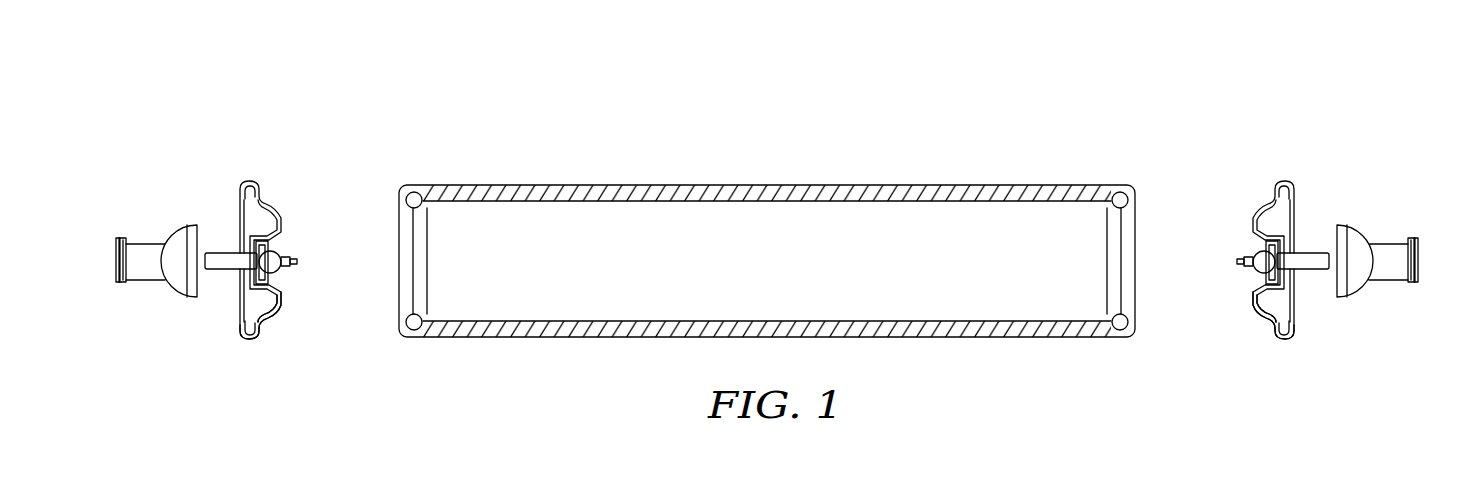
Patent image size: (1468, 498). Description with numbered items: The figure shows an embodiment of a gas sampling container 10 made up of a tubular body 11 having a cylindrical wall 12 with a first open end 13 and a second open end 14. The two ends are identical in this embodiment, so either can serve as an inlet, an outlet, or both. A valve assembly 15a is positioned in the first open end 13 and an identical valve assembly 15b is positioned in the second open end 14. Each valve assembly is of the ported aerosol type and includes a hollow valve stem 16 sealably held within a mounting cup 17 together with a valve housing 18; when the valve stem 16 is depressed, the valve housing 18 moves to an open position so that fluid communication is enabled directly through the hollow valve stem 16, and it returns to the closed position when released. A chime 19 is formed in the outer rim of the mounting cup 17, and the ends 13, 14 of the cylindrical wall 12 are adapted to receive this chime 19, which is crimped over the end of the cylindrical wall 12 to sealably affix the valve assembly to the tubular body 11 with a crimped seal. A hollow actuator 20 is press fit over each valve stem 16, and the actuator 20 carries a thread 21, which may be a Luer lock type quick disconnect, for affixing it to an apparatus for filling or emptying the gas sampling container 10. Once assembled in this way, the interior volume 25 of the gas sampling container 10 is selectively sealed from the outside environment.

The gas sampling container 10 is at (442, 103).
The tubular body 11 is at (757, 163).
The cylindrical wall 12 is at (877, 183).
The first open end 13 is at (405, 240).
The second open end 14 is at (1128, 290).
The valve assembly 15a is at (232, 188).
The valve assembly 15b is at (1305, 188).
The hollow valve stem 16 is at (225, 266).
The mounting cup 17 is at (248, 310).
The valve housing 18 is at (267, 255).
The chime 19 is at (258, 334).
The hollow actuator 20 is at (150, 268).
The thread 21 is at (125, 240).
The interior volume 25 is at (748, 287).